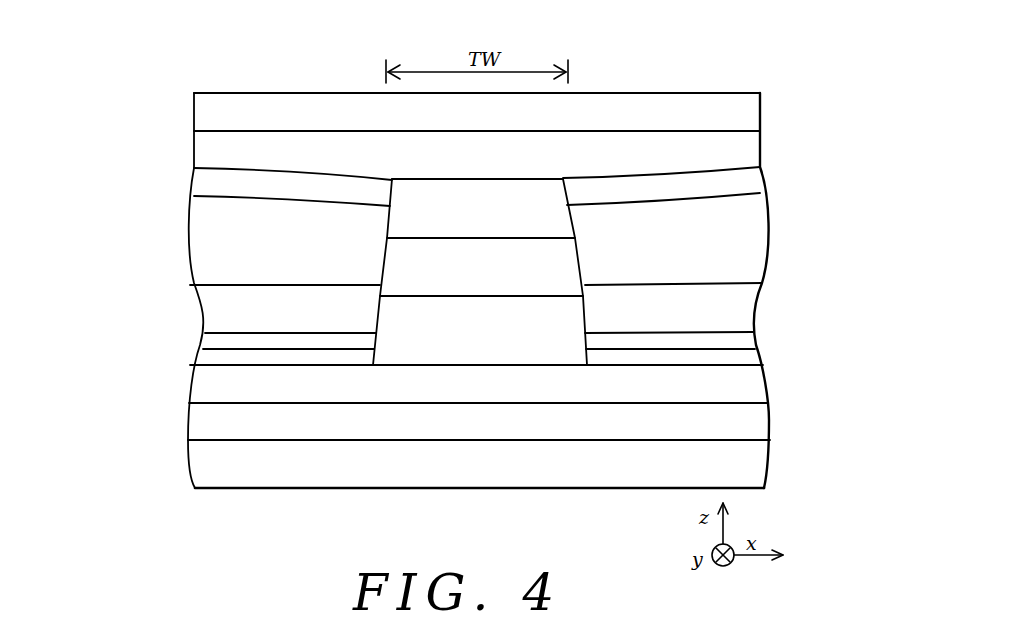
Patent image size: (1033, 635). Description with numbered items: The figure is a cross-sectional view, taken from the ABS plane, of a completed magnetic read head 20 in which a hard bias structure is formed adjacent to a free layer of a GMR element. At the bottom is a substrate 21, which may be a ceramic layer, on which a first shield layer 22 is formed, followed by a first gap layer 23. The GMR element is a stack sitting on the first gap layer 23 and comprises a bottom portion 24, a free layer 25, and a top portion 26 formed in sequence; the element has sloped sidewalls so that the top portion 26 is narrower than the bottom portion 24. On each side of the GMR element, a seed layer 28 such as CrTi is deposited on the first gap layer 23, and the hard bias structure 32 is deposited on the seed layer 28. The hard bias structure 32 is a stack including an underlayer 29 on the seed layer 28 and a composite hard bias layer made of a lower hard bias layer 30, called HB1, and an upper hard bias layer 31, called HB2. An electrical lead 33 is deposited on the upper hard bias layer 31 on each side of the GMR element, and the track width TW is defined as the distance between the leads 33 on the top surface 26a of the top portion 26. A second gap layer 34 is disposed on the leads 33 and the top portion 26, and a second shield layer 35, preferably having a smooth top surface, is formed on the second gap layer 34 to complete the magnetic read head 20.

The magnetic read head 20 is at (160, 70).
The substrate 21 is at (750, 465).
The first shield layer 22 is at (750, 420).
The first gap layer 23 is at (750, 385).
The bottom portion 24 is at (419, 347).
The free layer 25 is at (473, 268).
The top portion 26 is at (520, 218).
The top surface 26a is at (543, 179).
The seed layer 28 is at (208, 359).
The underlayer 29 is at (207, 337).
The lower hard bias layer 30 is at (213, 305).
The upper hard bias layer 31 is at (210, 248).
The hard bias structure 32 is at (113, 197).
The electrical lead 33 is at (207, 175).
The second gap layer 34 is at (743, 140).
The second shield layer 35 is at (743, 102).